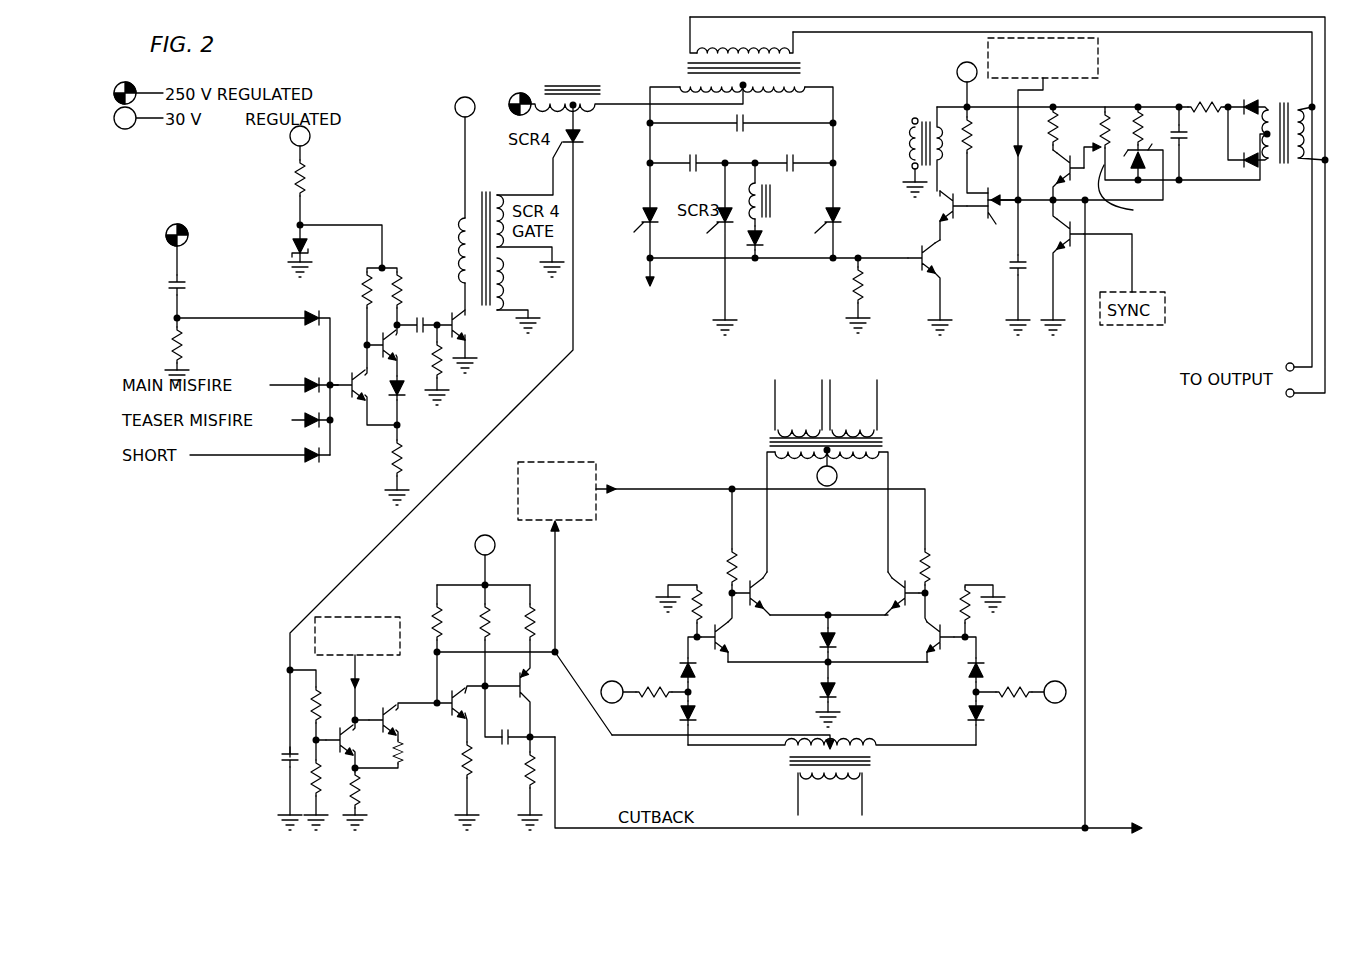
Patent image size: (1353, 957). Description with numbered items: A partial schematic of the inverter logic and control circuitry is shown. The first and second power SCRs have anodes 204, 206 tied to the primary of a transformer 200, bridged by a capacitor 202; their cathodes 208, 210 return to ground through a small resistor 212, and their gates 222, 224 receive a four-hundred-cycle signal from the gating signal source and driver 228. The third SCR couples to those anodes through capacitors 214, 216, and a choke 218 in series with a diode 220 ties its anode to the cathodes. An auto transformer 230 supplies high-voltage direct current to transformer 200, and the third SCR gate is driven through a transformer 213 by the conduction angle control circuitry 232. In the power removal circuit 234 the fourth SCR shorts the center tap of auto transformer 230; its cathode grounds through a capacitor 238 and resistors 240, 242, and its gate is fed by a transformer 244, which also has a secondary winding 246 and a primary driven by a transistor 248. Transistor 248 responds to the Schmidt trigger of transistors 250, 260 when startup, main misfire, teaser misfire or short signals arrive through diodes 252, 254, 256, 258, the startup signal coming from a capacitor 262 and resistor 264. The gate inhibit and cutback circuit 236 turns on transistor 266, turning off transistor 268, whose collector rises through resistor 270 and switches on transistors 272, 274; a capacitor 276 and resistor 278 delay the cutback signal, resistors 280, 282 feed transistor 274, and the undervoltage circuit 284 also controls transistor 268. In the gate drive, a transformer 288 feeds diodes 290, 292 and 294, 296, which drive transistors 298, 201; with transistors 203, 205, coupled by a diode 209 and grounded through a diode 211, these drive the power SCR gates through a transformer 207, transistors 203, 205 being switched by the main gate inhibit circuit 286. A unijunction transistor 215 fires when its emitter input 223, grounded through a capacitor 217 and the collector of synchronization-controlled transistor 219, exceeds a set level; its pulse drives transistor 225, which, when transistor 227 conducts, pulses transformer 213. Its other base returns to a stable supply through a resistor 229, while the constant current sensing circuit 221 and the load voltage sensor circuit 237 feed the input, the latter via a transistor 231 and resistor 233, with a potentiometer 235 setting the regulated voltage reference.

The transformer 200 is at (684, 74).
The transistor 201 is at (934, 641).
The capacitor 202 is at (746, 118).
The transistor 203 is at (764, 596).
The anode 204 is at (649, 176).
The transistor 205 is at (890, 596).
The anode 206 is at (834, 178).
The transformer 207 is at (880, 443).
The cathode 208 is at (649, 245).
The diode 209 is at (836, 639).
The cathode 210 is at (835, 241).
The diode 211 is at (836, 693).
The resistor 212 is at (852, 287).
The transformer 213 is at (936, 113).
The capacitor 214 is at (689, 158).
The unijunction transistor 215 is at (995, 228).
The capacitor 216 is at (788, 158).
The capacitor 217 is at (1010, 276).
The choke 218 is at (772, 200).
The transistor 219 is at (1066, 236).
The diode 220 is at (764, 239).
The constant current sensing circuit 221 is at (1099, 49).
The gate 222 is at (633, 230).
The emitter input 223 is at (1016, 188).
The gate 224 is at (817, 230).
The transistor 225 is at (940, 207).
The transistor 227 is at (938, 258).
The gating signal source and driver 228 is at (829, 580).
The resistor 229 is at (973, 138).
The auto transformer 230 is at (569, 88).
The transistor 231 is at (1066, 170).
The conduction angle control circuitry 232 is at (1154, 138).
The resistor 233 is at (1057, 126).
The fourth SCR power removal circuit 234 is at (342, 201).
The potentiometer 235 is at (1132, 196).
The gate inhibiting and conduction angle cutback circuit 236 is at (655, 594).
The load voltage sensor circuit 237 is at (1254, 140).
The capacitor 238 is at (280, 762).
The resistor 240 is at (320, 715).
The resistor 242 is at (320, 780).
The transformer 244 is at (508, 190).
The secondary winding 246 is at (506, 288).
The transistor 248 is at (467, 328).
The transistor 250 is at (363, 396).
The diode 252 is at (312, 327).
The diode 254 is at (318, 372).
The diode 256 is at (312, 412).
The diode 258 is at (308, 466).
The transistor 260 is at (396, 350).
The capacitor 262 is at (187, 290).
The resistor 264 is at (187, 345).
The transistor 266 is at (351, 775).
The transistor 268 is at (396, 735).
The resistor 270 is at (434, 622).
The transistor 272 is at (455, 722).
The transistor 274 is at (528, 695).
The capacitor 276 is at (503, 748).
The resistor 278 is at (524, 788).
The resistor 280 is at (482, 622).
The resistor 282 is at (528, 622).
The undervoltage circuit 284 is at (345, 617).
The main gate inhibit circuit 286 is at (560, 462).
The transformer 288 is at (868, 758).
The diode 290 is at (696, 714).
The diode 292 is at (986, 712).
The diode 294 is at (696, 676).
The diode 296 is at (986, 668).
The transistor 298 is at (725, 641).